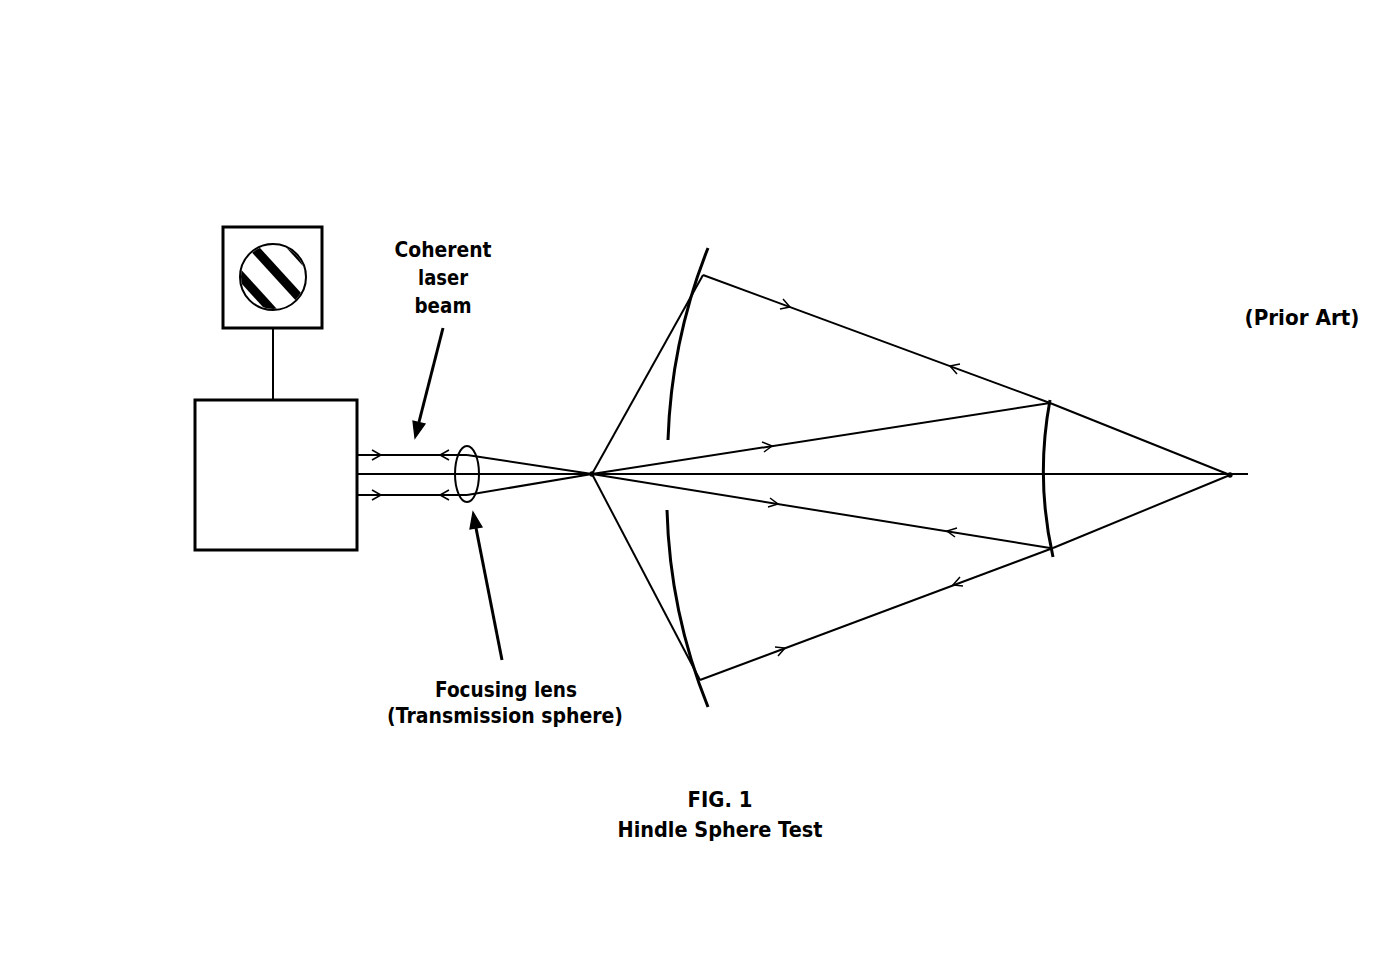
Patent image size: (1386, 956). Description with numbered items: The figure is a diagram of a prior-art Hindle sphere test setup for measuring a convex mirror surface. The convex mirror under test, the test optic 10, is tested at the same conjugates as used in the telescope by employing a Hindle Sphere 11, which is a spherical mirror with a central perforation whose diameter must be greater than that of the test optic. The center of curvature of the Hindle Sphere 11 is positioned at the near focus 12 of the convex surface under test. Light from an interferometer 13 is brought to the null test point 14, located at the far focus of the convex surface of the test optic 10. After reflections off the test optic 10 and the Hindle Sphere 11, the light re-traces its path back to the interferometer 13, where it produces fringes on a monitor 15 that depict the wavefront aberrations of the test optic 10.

The test optic 10 is at (1044, 379).
The Hindle Sphere 11 is at (700, 231).
The near focus 12 is at (1227, 502).
The interferometer 13 is at (267, 574).
The null test point 14 is at (598, 450).
The monitor 15 is at (283, 207).